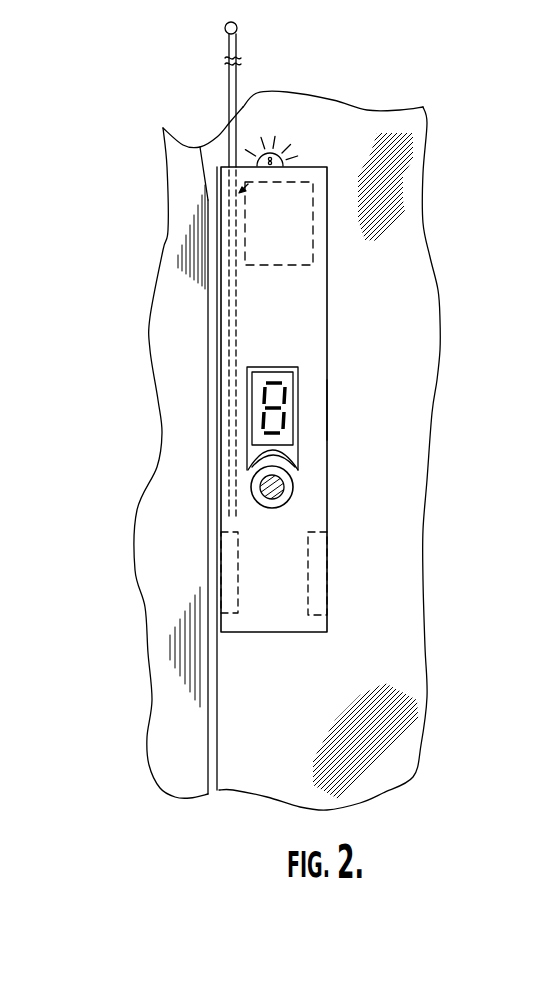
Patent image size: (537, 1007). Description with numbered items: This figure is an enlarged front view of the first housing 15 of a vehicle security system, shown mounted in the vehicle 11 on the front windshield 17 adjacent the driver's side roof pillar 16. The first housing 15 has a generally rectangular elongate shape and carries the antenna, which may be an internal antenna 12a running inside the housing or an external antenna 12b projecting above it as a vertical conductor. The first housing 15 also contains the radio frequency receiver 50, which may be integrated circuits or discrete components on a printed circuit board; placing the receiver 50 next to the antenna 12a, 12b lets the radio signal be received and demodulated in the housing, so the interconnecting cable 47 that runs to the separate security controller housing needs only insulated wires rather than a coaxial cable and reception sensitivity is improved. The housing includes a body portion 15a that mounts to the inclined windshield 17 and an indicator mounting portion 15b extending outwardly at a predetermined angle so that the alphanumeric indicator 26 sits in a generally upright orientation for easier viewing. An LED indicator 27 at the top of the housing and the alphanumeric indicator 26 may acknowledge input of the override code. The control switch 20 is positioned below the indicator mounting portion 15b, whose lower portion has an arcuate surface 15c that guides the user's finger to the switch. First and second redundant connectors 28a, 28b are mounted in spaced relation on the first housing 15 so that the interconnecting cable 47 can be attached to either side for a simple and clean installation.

The vehicle 11 is at (290, 479).
The internal antenna 12a is at (222, 287).
The external antenna 12b is at (230, 68).
The first housing 15 is at (330, 303).
The body portion 15a is at (327, 410).
The indicator mounting portion 15b is at (298, 445).
The arcuate surface 15c is at (295, 477).
The roof pillar 16 is at (163, 565).
The front windshield 17 is at (410, 655).
The control switch 20 is at (257, 495).
The alphanumeric indicator 26 is at (255, 395).
The LED indicator 27 is at (263, 150).
The first redundant connector 28a is at (220, 552).
The second redundant connector 28b is at (327, 575).
The interconnecting cable 47 is at (213, 722).
The radio frequency receiver 50 is at (302, 182).